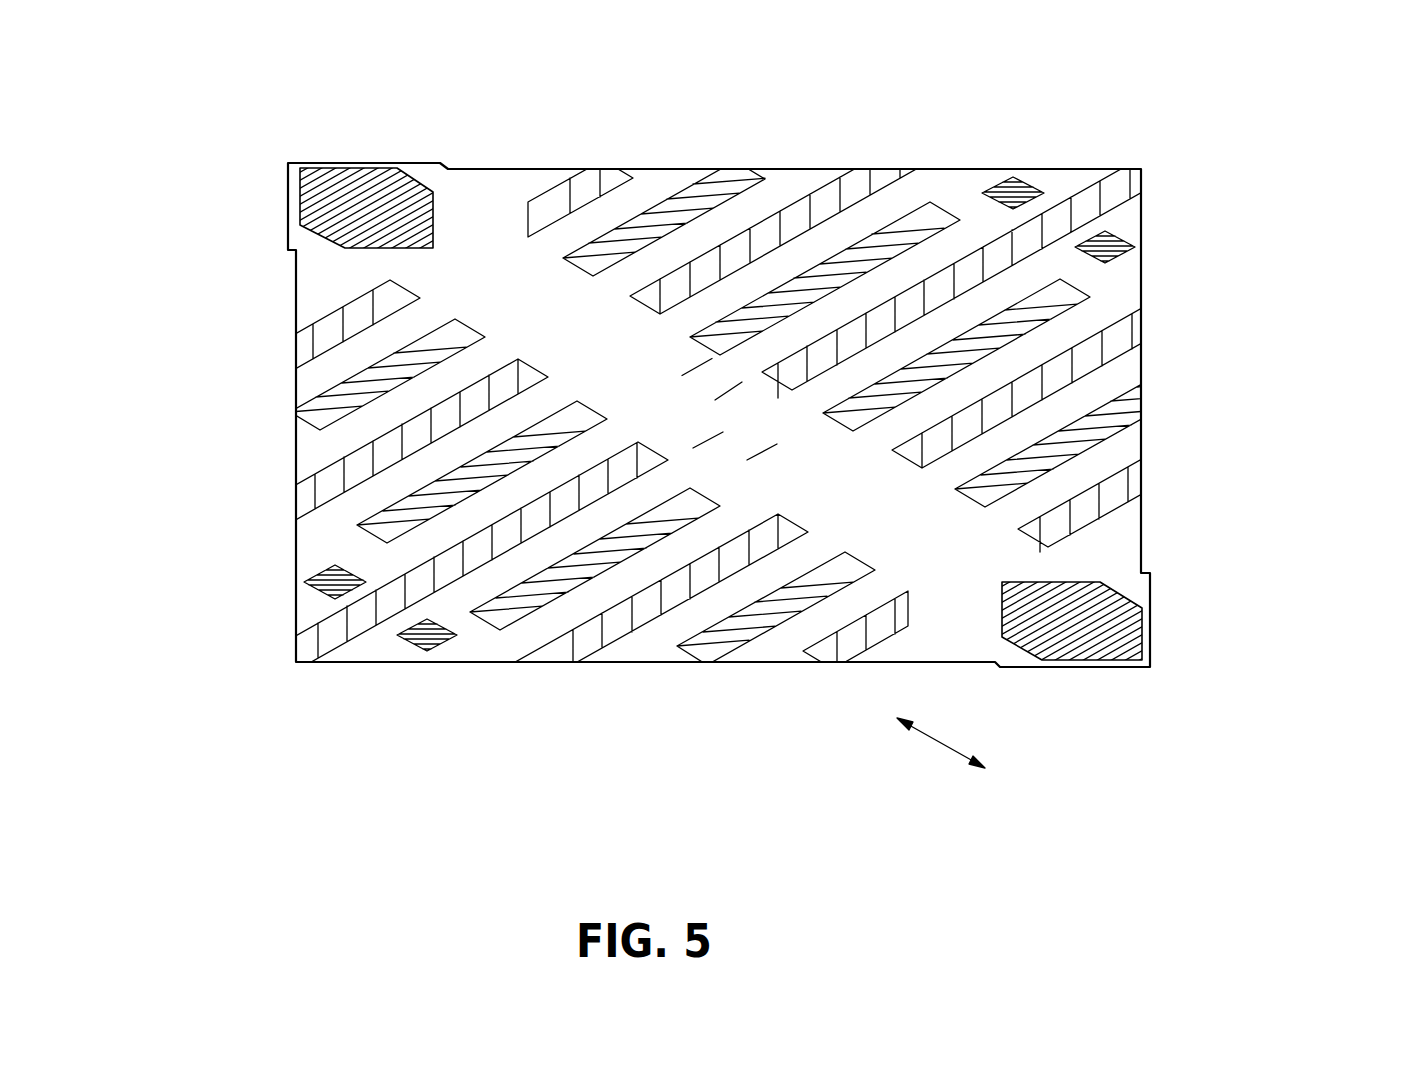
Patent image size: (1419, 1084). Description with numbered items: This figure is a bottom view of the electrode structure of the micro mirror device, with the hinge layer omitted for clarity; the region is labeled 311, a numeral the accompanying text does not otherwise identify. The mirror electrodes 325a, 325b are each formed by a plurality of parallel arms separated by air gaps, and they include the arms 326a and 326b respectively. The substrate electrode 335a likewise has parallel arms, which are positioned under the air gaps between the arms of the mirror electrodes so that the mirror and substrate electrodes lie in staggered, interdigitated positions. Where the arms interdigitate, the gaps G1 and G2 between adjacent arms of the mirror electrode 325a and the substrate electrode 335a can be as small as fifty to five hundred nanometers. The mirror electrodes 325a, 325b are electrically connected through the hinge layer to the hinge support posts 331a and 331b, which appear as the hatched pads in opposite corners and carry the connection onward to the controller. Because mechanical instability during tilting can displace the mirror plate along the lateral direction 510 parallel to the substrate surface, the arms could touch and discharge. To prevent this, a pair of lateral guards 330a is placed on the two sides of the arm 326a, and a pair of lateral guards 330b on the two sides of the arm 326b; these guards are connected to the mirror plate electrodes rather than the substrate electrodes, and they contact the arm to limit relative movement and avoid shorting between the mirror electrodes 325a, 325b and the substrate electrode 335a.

The semiconductor light emitting device / substrate region 311 is at (614, 364).
The mirror electrode 325a is at (1117, 482).
The mirror electrode 325b is at (593, 637).
The arm 326a is at (1005, 270).
The arm 326b is at (415, 568).
The lateral guards 330a is at (1095, 247).
The lateral guards 330b is at (423, 632).
The hinge support post 331a is at (362, 198).
The hinge support post 331b is at (1078, 633).
The substrate electrode 335a is at (733, 613).
The lateral direction 510 is at (925, 762).
The gap G1 is at (748, 405).
The gap G2 is at (665, 415).